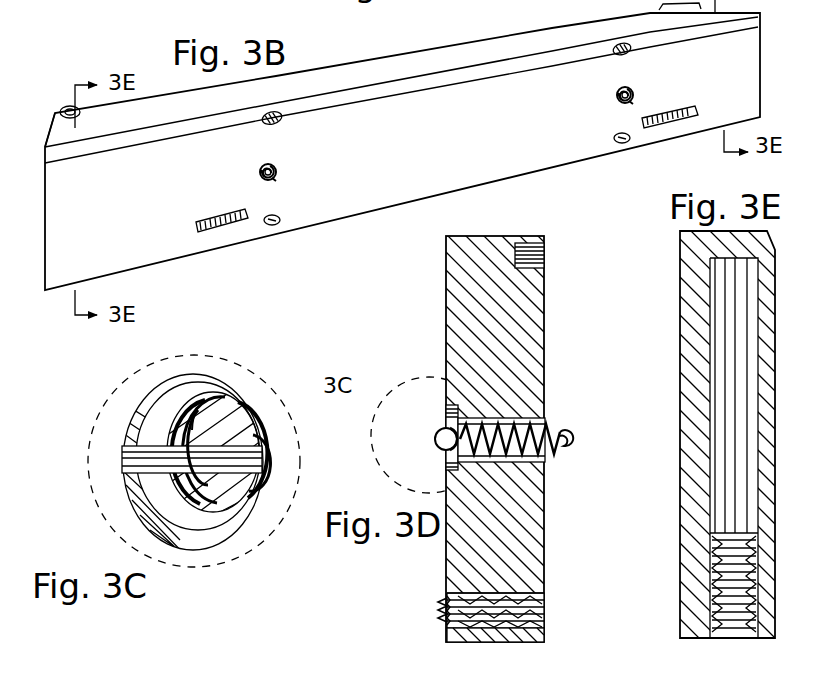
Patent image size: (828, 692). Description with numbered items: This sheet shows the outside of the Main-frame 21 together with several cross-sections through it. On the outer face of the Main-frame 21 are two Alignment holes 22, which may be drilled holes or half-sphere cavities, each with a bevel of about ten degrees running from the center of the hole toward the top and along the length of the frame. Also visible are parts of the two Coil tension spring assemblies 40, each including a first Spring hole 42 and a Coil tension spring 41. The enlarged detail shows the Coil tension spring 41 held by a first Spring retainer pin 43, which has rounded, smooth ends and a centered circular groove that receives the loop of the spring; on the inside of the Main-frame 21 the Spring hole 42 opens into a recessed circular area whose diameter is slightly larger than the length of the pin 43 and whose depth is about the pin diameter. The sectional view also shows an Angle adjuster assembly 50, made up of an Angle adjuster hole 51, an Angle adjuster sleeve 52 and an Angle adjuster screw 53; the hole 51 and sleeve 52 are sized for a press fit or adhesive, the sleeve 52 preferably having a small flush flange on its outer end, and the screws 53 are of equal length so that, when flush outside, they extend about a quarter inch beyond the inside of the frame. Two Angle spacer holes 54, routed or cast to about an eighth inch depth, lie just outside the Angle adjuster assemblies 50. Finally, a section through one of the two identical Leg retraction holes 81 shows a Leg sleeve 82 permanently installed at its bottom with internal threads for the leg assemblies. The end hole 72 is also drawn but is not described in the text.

In FIG. 3B, the Main-frame 21 is at (552, 168).
In FIG. 3C, the Main-frame 21 is at (125, 402).
In FIG. 3D, the Main-frame 21 is at (445, 330).
In FIG. 3E, the Main-frame 21 is at (680, 338).
In FIG. 3B, the Alignment hole 22 is at (283, 122).
In FIG. 3D, the Alignment hole 22 is at (546, 250).
In FIG. 3C, the Coil tension spring assembly 40 is at (120, 509).
In FIG. 3D, the Coil tension spring assembly 40 is at (392, 436).
In FIG. 3B, the Coil tension spring 41 is at (284, 172).
In FIG. 3C, the Coil tension spring 41 is at (199, 410).
In FIG. 3D, the Coil tension spring 41 is at (443, 428).
In FIG. 3B, the Spring hole #1 42 is at (258, 172).
In FIG. 3C, the Spring hole #1 42 is at (208, 513).
In FIG. 3D, the Spring hole #1 42 is at (548, 430).
In FIG. 3C, the Spring retainer pin #1 43 is at (122, 459).
In FIG. 3D, the Spring retainer pin #1 43 is at (436, 446).
In FIG. 3B, the Angle adjuster assembly 50 is at (288, 216).
In FIG. 3D, the Angle adjuster assembly 50 is at (434, 595).
In FIG. 3D, the Angle adjuster hole 51 is at (512, 632).
In FIG. 3D, the Angle adjuster sleeve 52 is at (550, 593).
In FIG. 3D, the Angle adjuster screw 53 is at (440, 618).
In FIG. 3B, the Angle spacer hole 54 is at (196, 222).
In FIG. 3B, the end hole 72 is at (62, 105).
In FIG. 3E, the Leg retraction hole 81 is at (729, 452).
In FIG. 3E, the Leg sleeve 82 is at (715, 642).